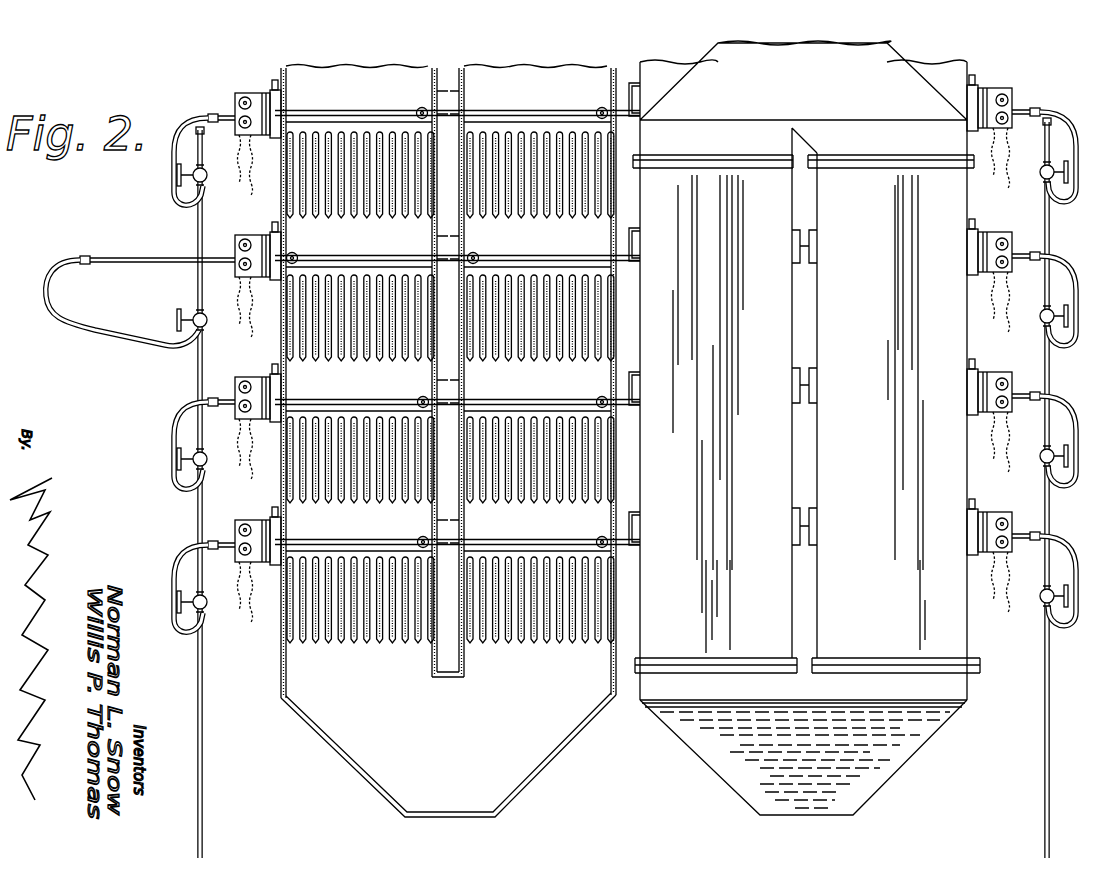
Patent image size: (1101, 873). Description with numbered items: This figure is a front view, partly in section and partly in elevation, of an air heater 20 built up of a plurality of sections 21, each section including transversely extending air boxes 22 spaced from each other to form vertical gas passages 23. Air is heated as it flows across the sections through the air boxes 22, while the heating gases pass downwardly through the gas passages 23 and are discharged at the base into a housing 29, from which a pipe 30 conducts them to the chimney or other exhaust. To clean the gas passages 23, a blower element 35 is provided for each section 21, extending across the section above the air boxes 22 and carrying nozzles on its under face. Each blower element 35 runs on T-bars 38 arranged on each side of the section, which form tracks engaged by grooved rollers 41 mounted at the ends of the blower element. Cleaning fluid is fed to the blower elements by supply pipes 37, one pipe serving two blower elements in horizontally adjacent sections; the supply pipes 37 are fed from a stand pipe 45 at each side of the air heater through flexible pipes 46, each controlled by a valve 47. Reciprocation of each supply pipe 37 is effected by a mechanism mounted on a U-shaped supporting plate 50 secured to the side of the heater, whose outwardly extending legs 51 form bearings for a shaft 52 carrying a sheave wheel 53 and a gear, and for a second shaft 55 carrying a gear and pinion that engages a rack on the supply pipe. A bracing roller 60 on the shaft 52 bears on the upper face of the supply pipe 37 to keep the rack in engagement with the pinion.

The air heater 20 is at (587, 712).
The section 21 is at (590, 600).
The air box 22 is at (347, 140).
The gas passage 23 is at (318, 140).
The housing 29 is at (527, 765).
The pipe 30 is at (762, 290).
The blower element 35 is at (428, 112).
The supply pipe 37 is at (150, 263).
The T-bar 38 is at (385, 124).
The roller 41 is at (296, 255).
The stand pipe 45 is at (197, 507).
The flexible pipe 46 is at (103, 332).
The valve 47 is at (176, 173).
The supporting plate 50 is at (274, 90).
The leg 51 is at (258, 270).
The shaft 52 is at (241, 240).
The sheave wheel 53 is at (244, 272).
The second shaft 55 is at (259, 418).
The bracing roller 60 is at (241, 378).